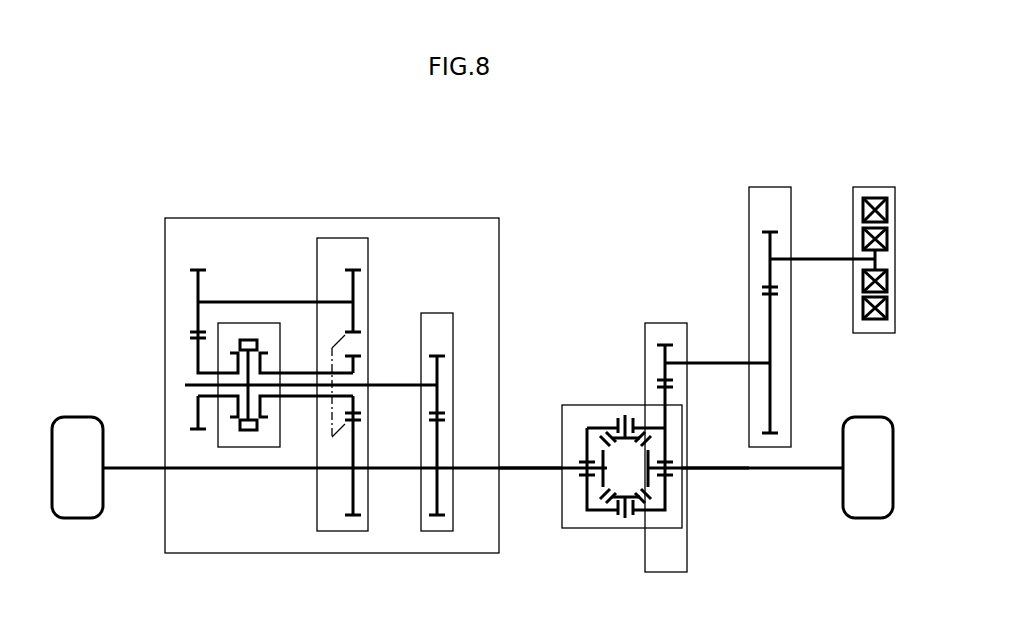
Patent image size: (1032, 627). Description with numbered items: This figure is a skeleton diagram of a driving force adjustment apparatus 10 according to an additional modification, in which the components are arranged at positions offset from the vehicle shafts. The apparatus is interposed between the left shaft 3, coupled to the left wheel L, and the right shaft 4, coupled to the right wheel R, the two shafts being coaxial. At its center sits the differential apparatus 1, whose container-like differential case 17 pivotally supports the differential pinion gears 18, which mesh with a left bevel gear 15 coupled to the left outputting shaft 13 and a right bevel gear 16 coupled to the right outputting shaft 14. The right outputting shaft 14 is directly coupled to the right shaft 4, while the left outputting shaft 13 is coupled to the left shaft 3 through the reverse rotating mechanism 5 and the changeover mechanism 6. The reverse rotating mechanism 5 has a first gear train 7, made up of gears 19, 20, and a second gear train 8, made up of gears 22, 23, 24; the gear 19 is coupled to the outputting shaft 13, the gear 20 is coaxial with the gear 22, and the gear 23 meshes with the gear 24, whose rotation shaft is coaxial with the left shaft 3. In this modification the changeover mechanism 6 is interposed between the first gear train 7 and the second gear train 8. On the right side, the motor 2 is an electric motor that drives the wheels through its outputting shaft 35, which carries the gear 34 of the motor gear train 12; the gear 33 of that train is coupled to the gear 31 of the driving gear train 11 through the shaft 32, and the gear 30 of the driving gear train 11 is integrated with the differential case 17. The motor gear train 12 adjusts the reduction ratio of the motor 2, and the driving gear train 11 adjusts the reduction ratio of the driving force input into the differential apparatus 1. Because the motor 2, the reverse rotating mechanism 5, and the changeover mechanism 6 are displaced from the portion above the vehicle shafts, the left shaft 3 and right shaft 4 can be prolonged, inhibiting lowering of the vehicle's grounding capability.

The differential apparatus 1 is at (580, 403).
The motor 2 is at (875, 335).
The left shaft 3 is at (134, 462).
The right shaft 4 is at (783, 471).
The reverse rotating mechanism 5 is at (318, 216).
The changeover mechanism 6 is at (250, 448).
The first gear train 7 is at (436, 311).
The second gear train 8 is at (316, 262).
The driving force adjustment apparatus 10 is at (170, 196).
The driving gear train 11 is at (665, 320).
The motor gear train 12 is at (748, 206).
The outputting shaft 13 is at (535, 463).
The outputting shaft 14 is at (705, 463).
The left bevel gear 15 is at (592, 490).
The right bevel gear 16 is at (667, 483).
The differential case 17 is at (600, 520).
The differential pinion gears 18 is at (615, 418).
The gear 19 is at (439, 495).
The gear 20 is at (439, 372).
The gear 22 is at (355, 405).
The gear 23 is at (355, 318).
The gear 24 is at (355, 488).
The gear 30 is at (668, 388).
The gear 31 is at (660, 350).
The shaft 32 is at (718, 360).
The gear 33 is at (772, 378).
The gear 34 is at (772, 245).
The outputting shaft 35 is at (821, 263).